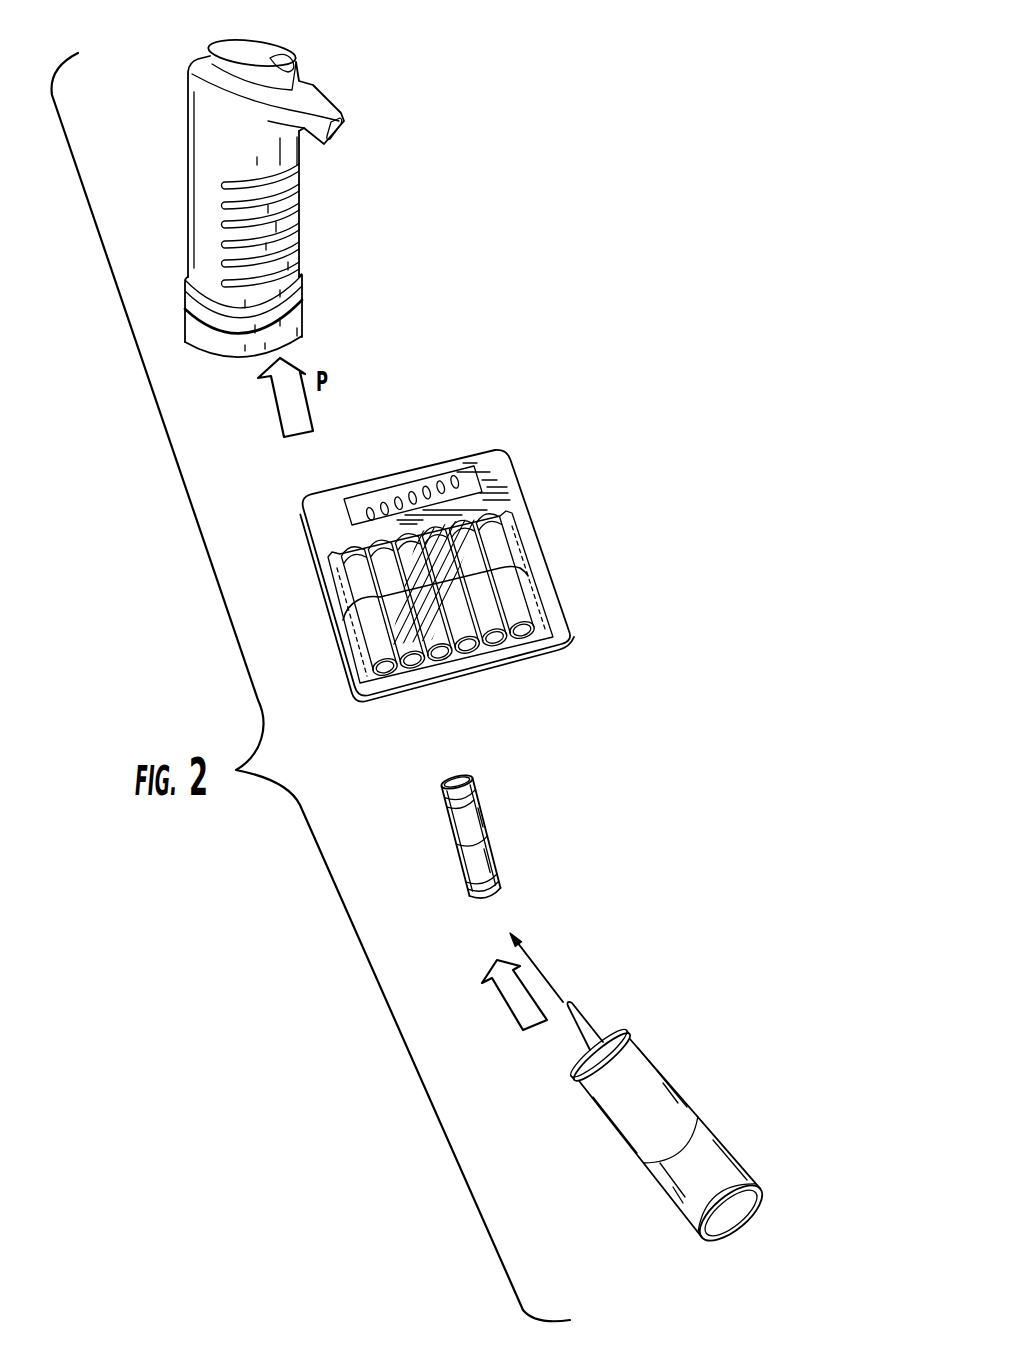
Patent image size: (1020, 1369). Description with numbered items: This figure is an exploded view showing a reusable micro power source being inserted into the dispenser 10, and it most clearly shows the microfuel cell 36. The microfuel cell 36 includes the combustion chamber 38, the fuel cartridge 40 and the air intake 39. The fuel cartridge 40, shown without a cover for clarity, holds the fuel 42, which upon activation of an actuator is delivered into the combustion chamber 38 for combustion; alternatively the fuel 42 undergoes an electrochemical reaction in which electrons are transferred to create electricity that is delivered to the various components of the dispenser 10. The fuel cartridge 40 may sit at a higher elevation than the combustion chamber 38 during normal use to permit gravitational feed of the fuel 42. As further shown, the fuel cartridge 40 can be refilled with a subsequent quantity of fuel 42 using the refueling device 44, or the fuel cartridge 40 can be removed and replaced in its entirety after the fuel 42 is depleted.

The dispenser 10 is at (327, 187).
The microfuel cell 36 is at (440, 462).
The combustion chamber 38 is at (396, 655).
The air intake 39 is at (469, 482).
The fuel cartridge 40 is at (480, 836).
The fuel 42 is at (455, 812).
The refueling device 44 is at (717, 1128).